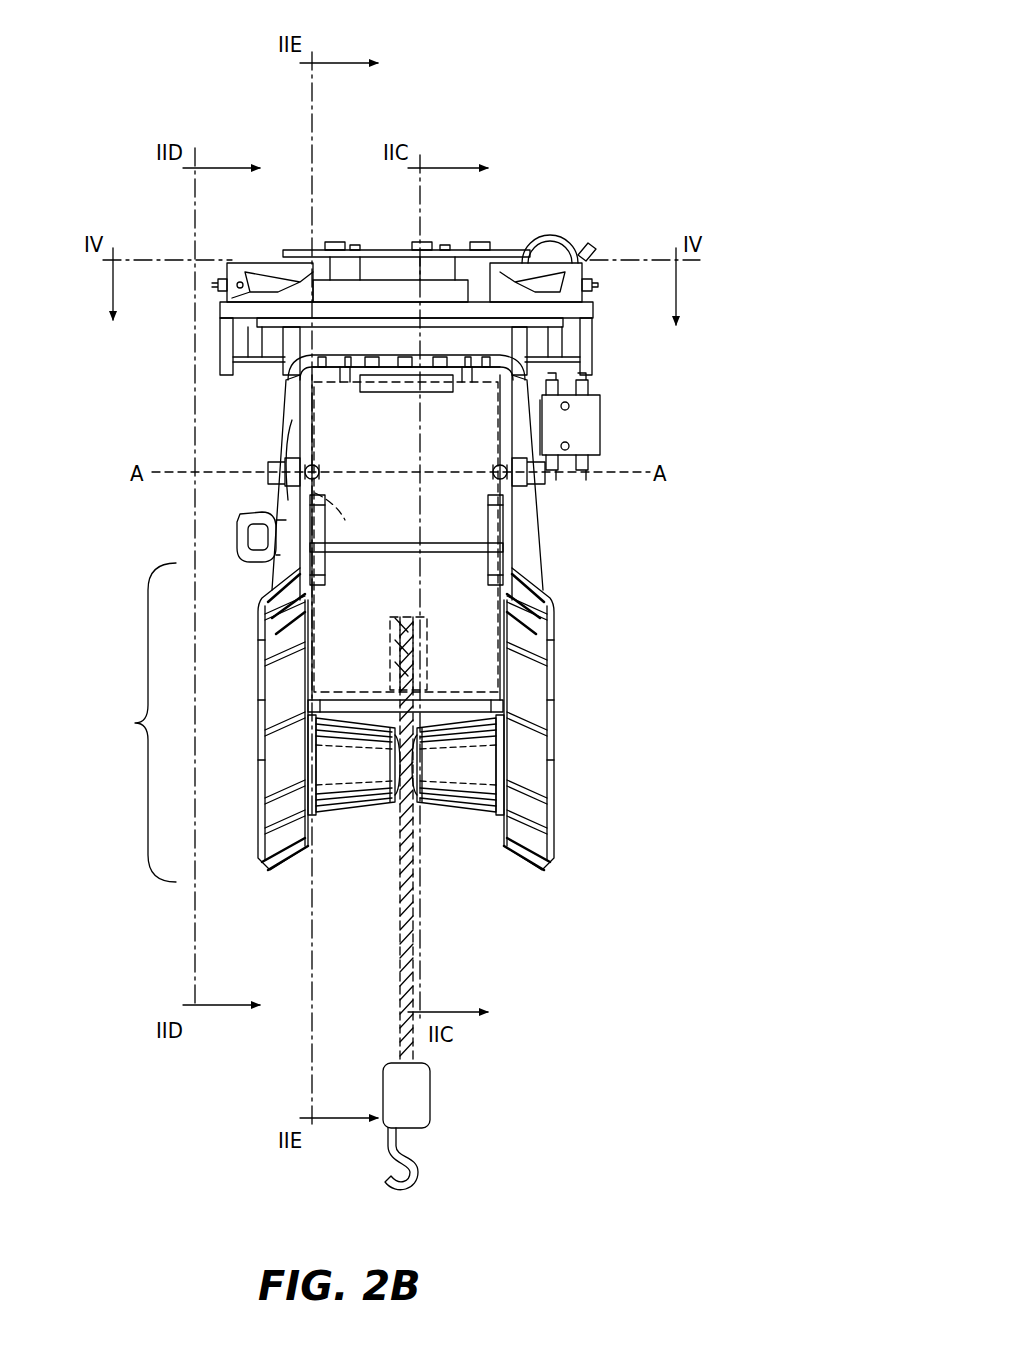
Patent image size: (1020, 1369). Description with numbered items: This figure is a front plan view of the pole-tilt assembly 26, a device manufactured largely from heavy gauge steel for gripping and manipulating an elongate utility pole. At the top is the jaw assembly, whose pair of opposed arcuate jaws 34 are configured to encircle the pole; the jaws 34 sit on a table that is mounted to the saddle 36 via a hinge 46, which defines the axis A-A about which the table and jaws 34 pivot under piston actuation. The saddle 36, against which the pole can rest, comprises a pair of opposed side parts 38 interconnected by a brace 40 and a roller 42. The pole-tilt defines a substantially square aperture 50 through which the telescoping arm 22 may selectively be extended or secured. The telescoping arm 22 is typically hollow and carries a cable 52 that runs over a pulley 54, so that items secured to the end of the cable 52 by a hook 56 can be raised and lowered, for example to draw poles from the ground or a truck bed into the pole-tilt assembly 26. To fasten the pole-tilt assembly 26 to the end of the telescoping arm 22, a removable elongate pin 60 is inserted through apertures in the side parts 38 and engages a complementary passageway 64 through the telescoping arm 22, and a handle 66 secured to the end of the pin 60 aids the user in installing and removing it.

The pole-tilt assembly 26 is at (720, 132).
The substantially square aperture 50 is at (340, 395).
The arcuate jaws 34 is at (228, 305).
The hinge 46 is at (497, 466).
The passageway 64 is at (315, 493).
The handle 66 is at (243, 538).
The removable elongate pin 60 is at (460, 530).
The telescoping arm 22 is at (520, 552).
The pulley 54 is at (425, 665).
The saddle 36 is at (135, 723).
The brace 40 is at (465, 700).
The roller 42 is at (342, 790).
The side parts 38 is at (285, 852).
The cable 52 is at (413, 960).
The hook 56 is at (430, 1168).